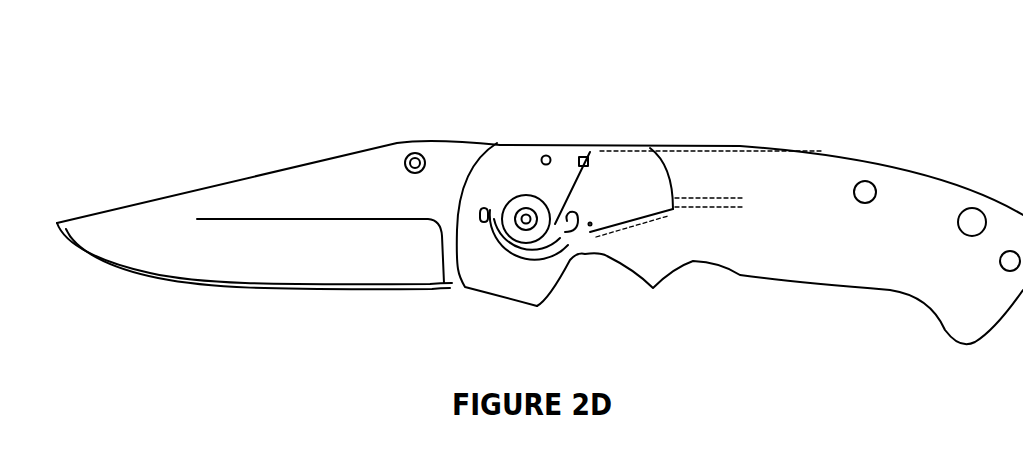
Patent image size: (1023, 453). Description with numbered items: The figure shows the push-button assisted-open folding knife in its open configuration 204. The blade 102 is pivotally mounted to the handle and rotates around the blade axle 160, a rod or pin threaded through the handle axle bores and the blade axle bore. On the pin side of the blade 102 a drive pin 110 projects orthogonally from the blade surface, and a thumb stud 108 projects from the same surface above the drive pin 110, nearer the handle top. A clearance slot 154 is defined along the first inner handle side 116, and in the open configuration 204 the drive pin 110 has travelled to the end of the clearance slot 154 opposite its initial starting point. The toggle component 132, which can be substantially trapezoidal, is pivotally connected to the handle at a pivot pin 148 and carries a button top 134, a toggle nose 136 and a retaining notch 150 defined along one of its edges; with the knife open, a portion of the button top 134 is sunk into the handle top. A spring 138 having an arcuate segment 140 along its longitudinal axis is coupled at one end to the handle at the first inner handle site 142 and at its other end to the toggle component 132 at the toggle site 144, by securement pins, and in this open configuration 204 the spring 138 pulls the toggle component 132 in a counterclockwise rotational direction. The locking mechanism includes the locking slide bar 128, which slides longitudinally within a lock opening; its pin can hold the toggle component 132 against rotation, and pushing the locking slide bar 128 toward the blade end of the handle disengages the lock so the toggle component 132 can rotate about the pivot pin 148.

The open configuration 204 is at (186, 55).
The blade 102 is at (122, 247).
The thumb stud 108 is at (414, 153).
The drive pin 110 is at (483, 224).
The first inner handle side 116 is at (823, 176).
The locking slide bar 128 is at (581, 157).
The toggle component 132 is at (633, 168).
The button top 134 is at (612, 152).
The toggle nose 136 is at (557, 213).
The spring 138 is at (718, 210).
The arcuate segment 140 is at (671, 212).
The first inner handle site 142 is at (722, 207).
The toggle site 144 is at (590, 224).
The pivot pin 148 is at (660, 167).
The retaining notch 150 is at (584, 235).
The clearance slot 154 is at (528, 260).
The blade axle 160 is at (525, 217).